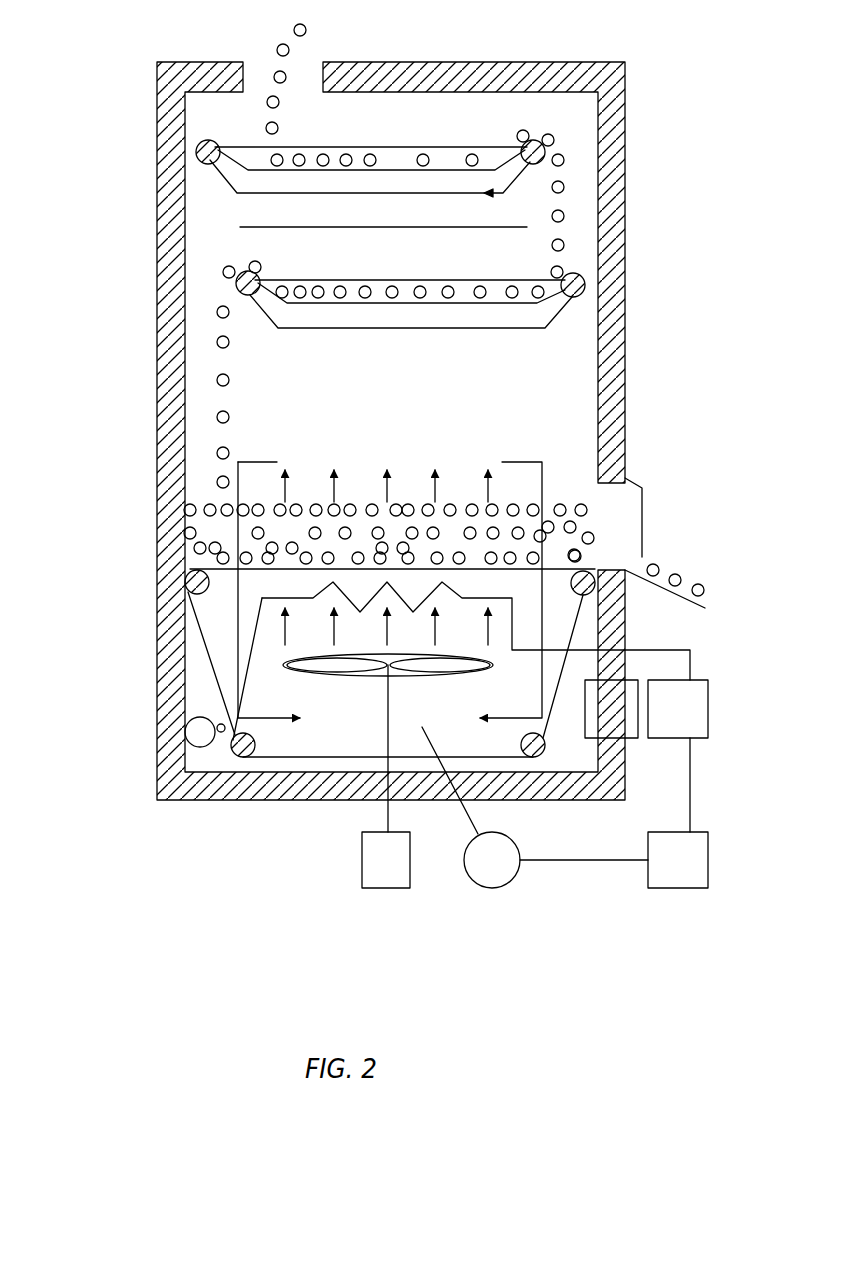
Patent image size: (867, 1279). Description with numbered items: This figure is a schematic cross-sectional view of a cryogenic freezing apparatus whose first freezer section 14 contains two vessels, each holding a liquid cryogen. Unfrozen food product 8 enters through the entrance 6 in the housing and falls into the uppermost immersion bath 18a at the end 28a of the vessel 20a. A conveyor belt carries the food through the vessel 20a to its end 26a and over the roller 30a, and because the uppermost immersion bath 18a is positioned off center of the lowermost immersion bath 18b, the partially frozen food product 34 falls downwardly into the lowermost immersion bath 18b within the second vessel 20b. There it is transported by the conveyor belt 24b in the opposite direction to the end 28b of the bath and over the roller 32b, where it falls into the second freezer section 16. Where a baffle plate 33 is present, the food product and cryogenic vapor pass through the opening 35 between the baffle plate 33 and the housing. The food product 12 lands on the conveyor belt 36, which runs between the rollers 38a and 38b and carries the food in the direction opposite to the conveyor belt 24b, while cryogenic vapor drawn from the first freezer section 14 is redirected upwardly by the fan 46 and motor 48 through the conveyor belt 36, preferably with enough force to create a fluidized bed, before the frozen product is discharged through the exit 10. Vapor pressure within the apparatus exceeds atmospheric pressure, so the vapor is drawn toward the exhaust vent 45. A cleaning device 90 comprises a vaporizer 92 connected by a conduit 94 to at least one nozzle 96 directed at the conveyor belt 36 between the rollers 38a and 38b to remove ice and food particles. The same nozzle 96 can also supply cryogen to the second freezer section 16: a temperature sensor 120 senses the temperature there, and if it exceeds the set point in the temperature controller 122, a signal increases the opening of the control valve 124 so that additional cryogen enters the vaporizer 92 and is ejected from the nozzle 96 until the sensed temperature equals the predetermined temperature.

The entrance 6 is at (258, 75).
The unfrozen food product 8 is at (306, 26).
The exit 10 is at (655, 527).
The food product 12 is at (580, 511).
The first freezer section 14 is at (215, 225).
The second freezer section 16 is at (385, 647).
The uppermost immersion bath 18a is at (452, 148).
The lowermost immersion bath 18b is at (344, 301).
The vessel 20a is at (348, 145).
The second vessel 20b is at (435, 275).
The conveyor belt 24b is at (495, 335).
The end of vessel 26a is at (527, 140).
The end of vessel 28a is at (252, 145).
The end of immersion bath 28b is at (312, 270).
The roller 30a is at (548, 150).
The roller 32b is at (238, 288).
The baffle plate 33 is at (360, 230).
The partially frozen food product 34 is at (565, 165).
The opening 35 is at (197, 200).
The conveyor belt 36 is at (344, 663).
The roller 38a is at (151, 593).
The roller 38b is at (258, 745).
The exhaust vent 45 is at (611, 709).
The fan 46 is at (400, 680).
The motor 48 is at (386, 860).
The cleaning device 90 is at (235, 688).
The vaporizer 92 is at (476, 622).
The conduit 94 is at (248, 625).
The nozzle 96 is at (195, 733).
The temperature sensor 120 is at (535, 807).
The temperature controller 122 is at (678, 860).
The control valve 124 is at (678, 756).